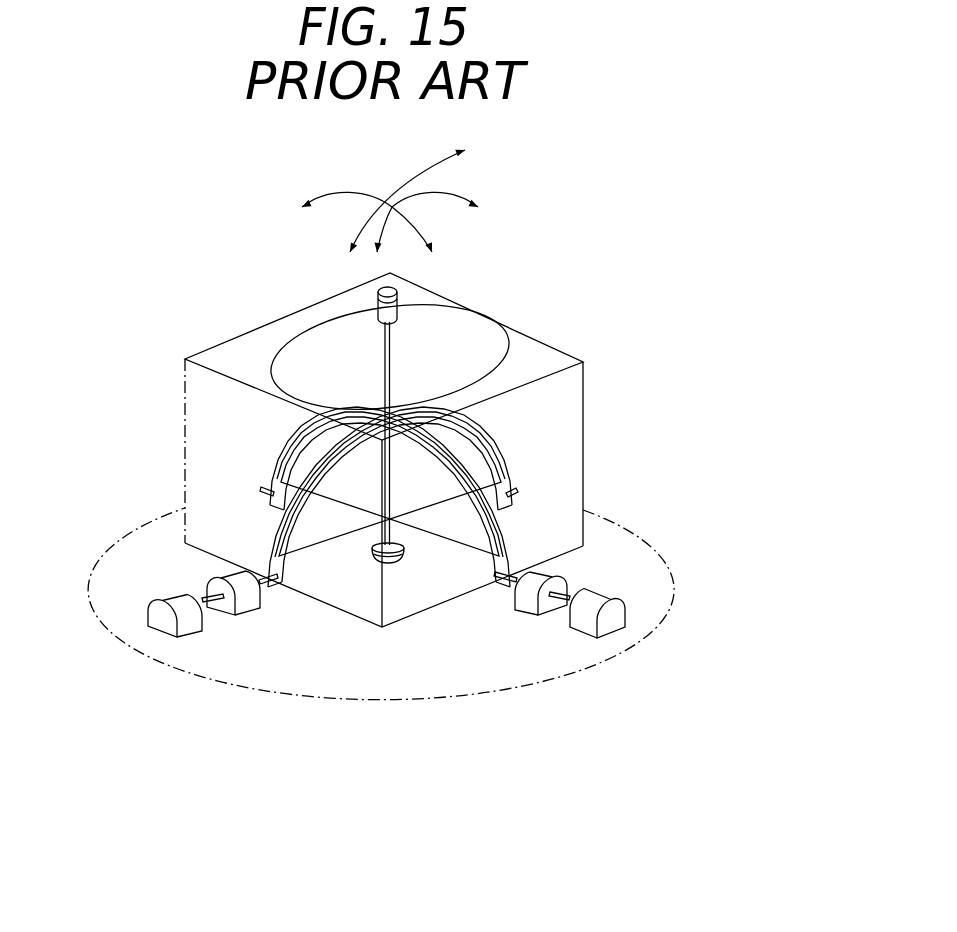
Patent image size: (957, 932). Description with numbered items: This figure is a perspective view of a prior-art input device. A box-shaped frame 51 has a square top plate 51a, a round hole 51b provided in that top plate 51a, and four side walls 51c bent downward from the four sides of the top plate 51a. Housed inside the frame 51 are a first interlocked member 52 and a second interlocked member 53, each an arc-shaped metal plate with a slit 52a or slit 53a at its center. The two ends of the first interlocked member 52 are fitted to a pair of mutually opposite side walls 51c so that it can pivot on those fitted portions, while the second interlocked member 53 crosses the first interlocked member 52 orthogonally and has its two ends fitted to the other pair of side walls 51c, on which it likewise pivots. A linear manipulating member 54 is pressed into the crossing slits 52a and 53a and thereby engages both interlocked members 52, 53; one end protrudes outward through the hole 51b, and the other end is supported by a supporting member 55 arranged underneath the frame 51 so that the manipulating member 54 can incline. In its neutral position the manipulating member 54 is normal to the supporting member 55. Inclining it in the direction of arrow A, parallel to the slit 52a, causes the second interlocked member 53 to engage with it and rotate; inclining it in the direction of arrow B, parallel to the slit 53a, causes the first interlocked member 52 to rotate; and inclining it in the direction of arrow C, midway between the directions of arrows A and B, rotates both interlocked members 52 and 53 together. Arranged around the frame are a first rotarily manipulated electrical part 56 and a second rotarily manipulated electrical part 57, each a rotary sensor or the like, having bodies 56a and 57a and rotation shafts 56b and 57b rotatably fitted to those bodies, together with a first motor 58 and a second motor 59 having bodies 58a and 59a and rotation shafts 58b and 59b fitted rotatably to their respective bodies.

The frame 51 is at (386, 450).
The top plate 51a is at (523, 333).
The hole 51b is at (470, 332).
The side walls 51c is at (183, 412).
The first interlocked member 52 is at (306, 569).
The slit 52a is at (272, 542).
The second interlocked member 53 is at (465, 569).
The slit 53a is at (497, 545).
The manipulating member 54 is at (383, 342).
The supporting member 55 is at (507, 678).
The first rotarily manipulated electrical part 56 is at (204, 623).
The body 56a is at (217, 578).
The rotation shaft 56b is at (265, 588).
The second rotarily manipulated electrical part 57 is at (588, 599).
The body 57a is at (528, 608).
The rotation shaft 57b is at (505, 590).
The first motor 58 is at (162, 668).
The body 58a is at (158, 623).
The rotation shaft 58b is at (218, 598).
The second motor 59 is at (643, 630).
The body 59a is at (618, 620).
The rotation shaft 59b is at (570, 590).
The arrow A is at (458, 192).
The arrow B is at (367, 192).
The arrow C is at (423, 163).